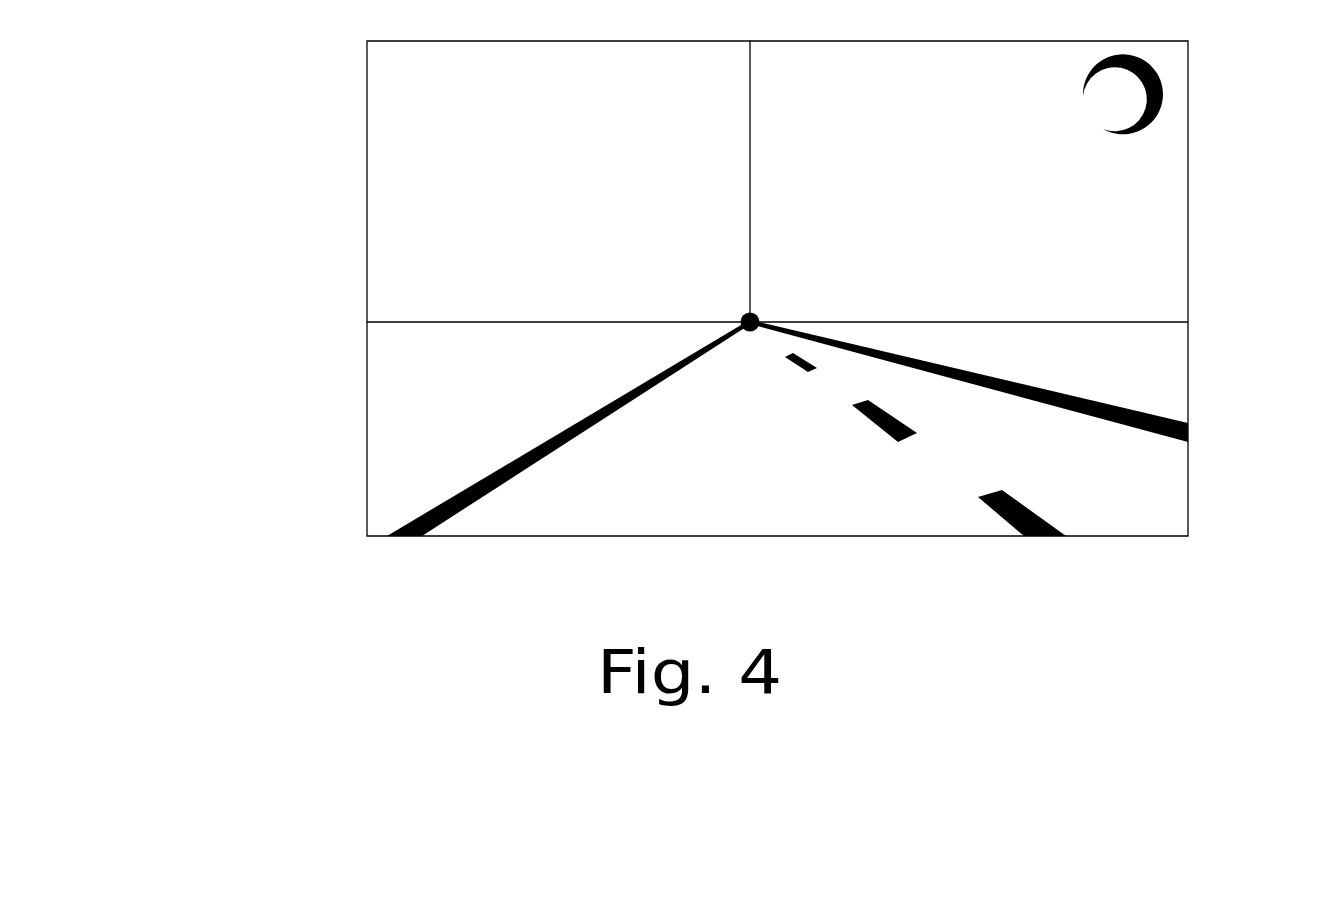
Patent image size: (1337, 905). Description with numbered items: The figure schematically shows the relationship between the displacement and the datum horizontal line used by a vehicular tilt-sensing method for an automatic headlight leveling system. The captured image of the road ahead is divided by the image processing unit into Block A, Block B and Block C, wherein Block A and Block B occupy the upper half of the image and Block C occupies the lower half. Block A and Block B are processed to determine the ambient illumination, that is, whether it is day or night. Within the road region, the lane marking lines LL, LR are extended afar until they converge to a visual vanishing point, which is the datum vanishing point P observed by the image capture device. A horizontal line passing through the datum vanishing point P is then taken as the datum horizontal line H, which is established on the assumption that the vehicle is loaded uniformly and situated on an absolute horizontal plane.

The Block A is at (558, 181).
The Block B is at (969, 181).
The Block C is at (777, 429).
The datum horizontal line H is at (400, 322).
The datum vanishing point P is at (757, 315).
The left lane marking line LL is at (433, 503).
The right lane marking line LR is at (1033, 513).